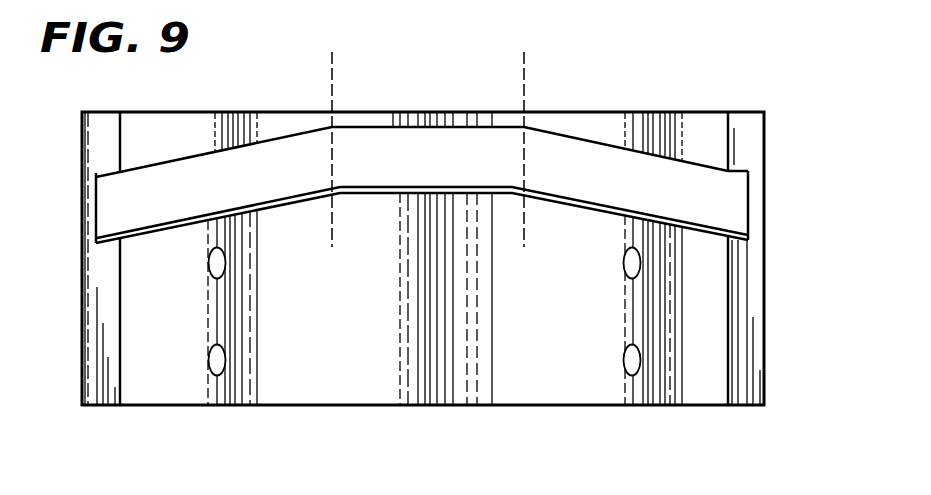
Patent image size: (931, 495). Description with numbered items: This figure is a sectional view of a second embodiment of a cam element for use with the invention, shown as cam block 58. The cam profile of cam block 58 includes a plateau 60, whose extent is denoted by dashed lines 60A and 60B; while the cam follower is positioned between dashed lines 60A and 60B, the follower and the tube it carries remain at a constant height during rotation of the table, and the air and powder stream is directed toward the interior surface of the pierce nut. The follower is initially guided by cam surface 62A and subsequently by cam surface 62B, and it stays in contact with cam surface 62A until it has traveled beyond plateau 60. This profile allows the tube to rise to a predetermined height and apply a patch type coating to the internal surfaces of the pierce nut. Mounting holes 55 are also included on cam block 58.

The mounting holes 55 is at (208, 268).
The cam block 58 is at (682, 126).
The plateau 60 is at (459, 159).
The dashed line 60A is at (333, 90).
The dashed line 60B is at (525, 90).
The cam surface 62A is at (380, 184).
The cam surface 62B is at (203, 159).